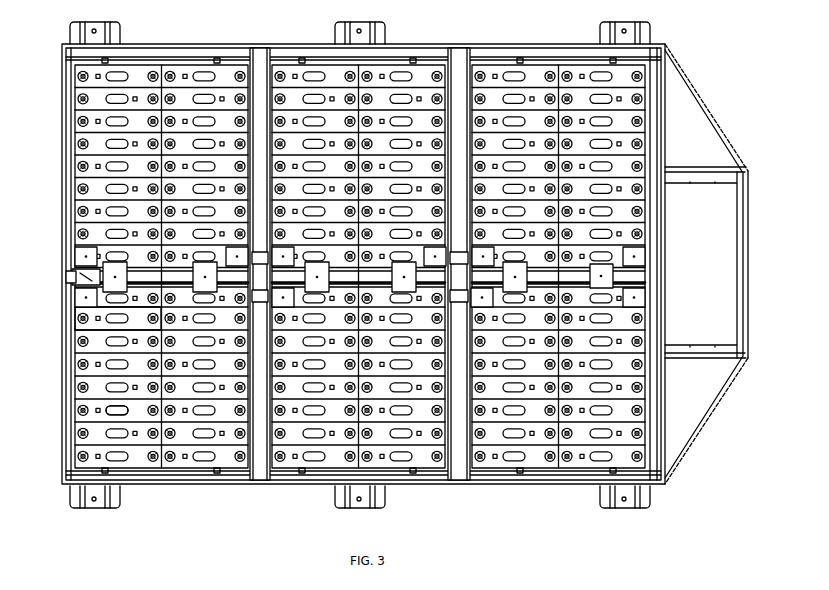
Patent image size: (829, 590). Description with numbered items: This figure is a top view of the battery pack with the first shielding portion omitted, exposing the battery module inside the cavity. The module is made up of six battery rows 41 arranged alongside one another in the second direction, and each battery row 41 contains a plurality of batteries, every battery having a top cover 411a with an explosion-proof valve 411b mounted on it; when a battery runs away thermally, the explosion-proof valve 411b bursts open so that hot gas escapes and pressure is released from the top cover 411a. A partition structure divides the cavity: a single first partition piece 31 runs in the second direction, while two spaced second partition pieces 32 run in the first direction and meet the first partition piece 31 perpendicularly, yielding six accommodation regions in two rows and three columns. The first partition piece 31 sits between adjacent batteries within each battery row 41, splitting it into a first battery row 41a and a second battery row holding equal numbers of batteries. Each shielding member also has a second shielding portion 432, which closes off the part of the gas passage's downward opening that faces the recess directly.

The battery row 41 is at (132, 70).
The first battery row 41a is at (139, 403).
The top cover 411a is at (75, 328).
The explosion-proof valve 411b is at (110, 410).
The first partition piece 31 is at (97, 273).
The second partition piece 32 is at (457, 72).
The second shielding portion 432 is at (605, 273).